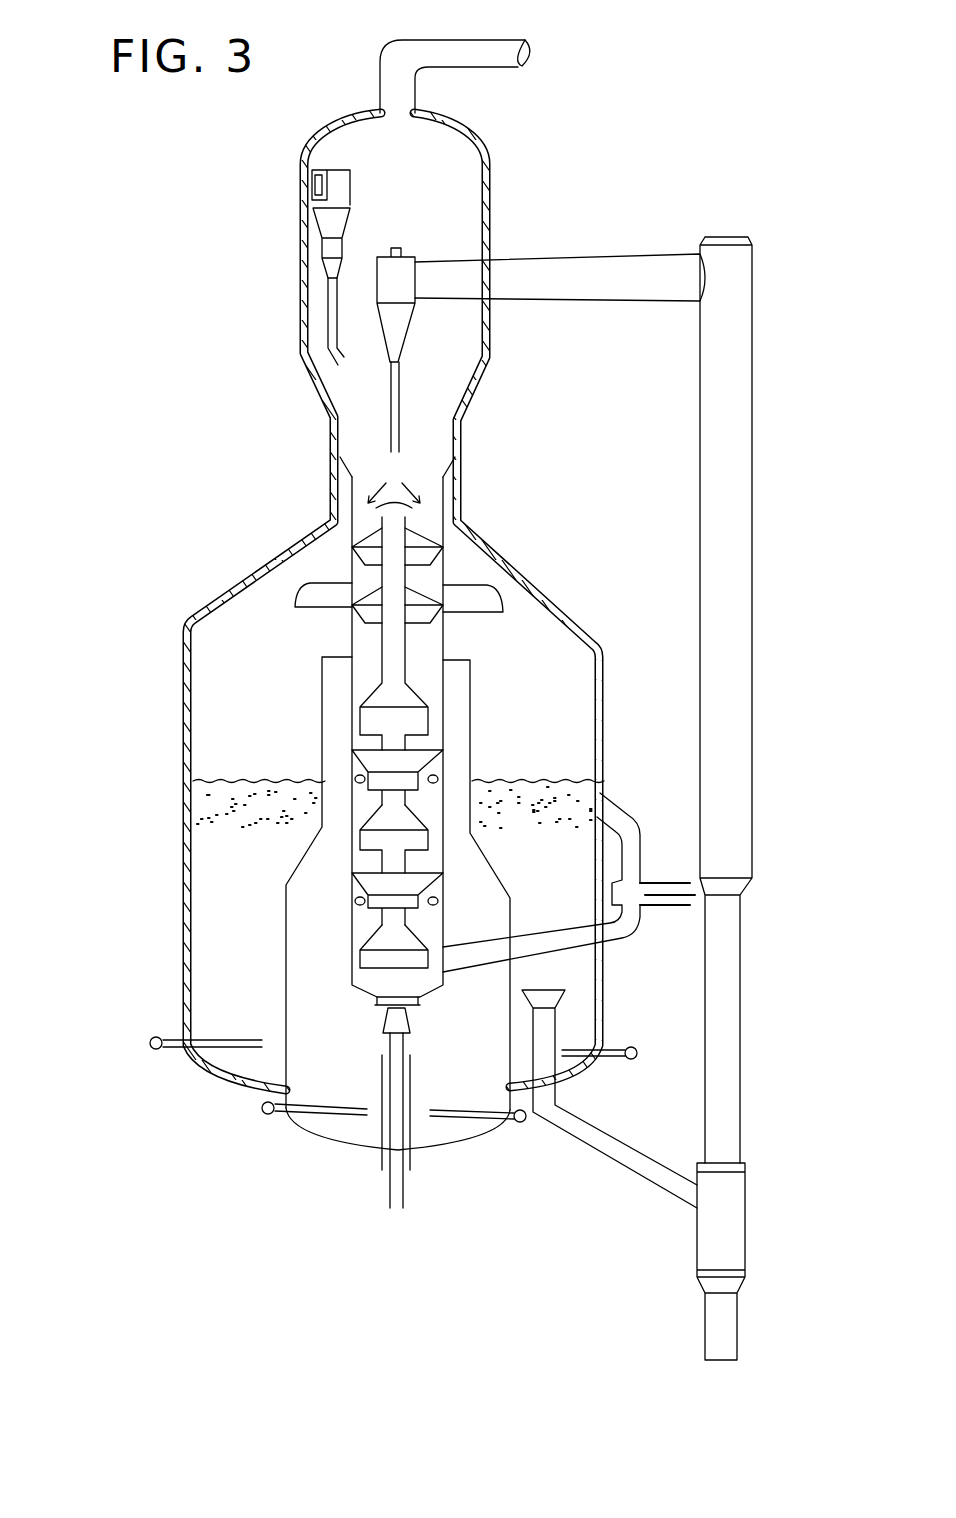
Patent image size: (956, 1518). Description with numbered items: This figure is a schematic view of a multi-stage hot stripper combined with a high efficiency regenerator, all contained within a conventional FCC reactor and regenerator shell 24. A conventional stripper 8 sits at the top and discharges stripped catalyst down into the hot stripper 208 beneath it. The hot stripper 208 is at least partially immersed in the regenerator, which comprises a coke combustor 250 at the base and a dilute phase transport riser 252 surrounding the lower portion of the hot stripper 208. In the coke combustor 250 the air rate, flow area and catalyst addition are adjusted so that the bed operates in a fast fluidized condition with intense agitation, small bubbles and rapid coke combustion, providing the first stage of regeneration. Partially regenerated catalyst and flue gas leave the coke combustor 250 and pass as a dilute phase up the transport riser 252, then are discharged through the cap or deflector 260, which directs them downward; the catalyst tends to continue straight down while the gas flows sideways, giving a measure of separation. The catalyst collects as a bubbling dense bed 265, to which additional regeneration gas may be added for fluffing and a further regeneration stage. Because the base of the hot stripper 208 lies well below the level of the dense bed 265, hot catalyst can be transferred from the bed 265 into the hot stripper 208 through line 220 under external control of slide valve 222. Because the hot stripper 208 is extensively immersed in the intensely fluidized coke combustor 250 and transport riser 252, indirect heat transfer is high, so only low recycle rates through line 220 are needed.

The conventional stripper 8 is at (445, 560).
The reactor and regenerator shell 24 is at (593, 645).
The cap or deflector 260 is at (305, 585).
The dilute phase transport riser 252 is at (322, 718).
The line 220 is at (625, 818).
The slide valve 222 is at (684, 916).
The bubbling dense bed 265 is at (255, 932).
The hot stripper 208 is at (345, 963).
The coke combustor 250 is at (440, 1148).